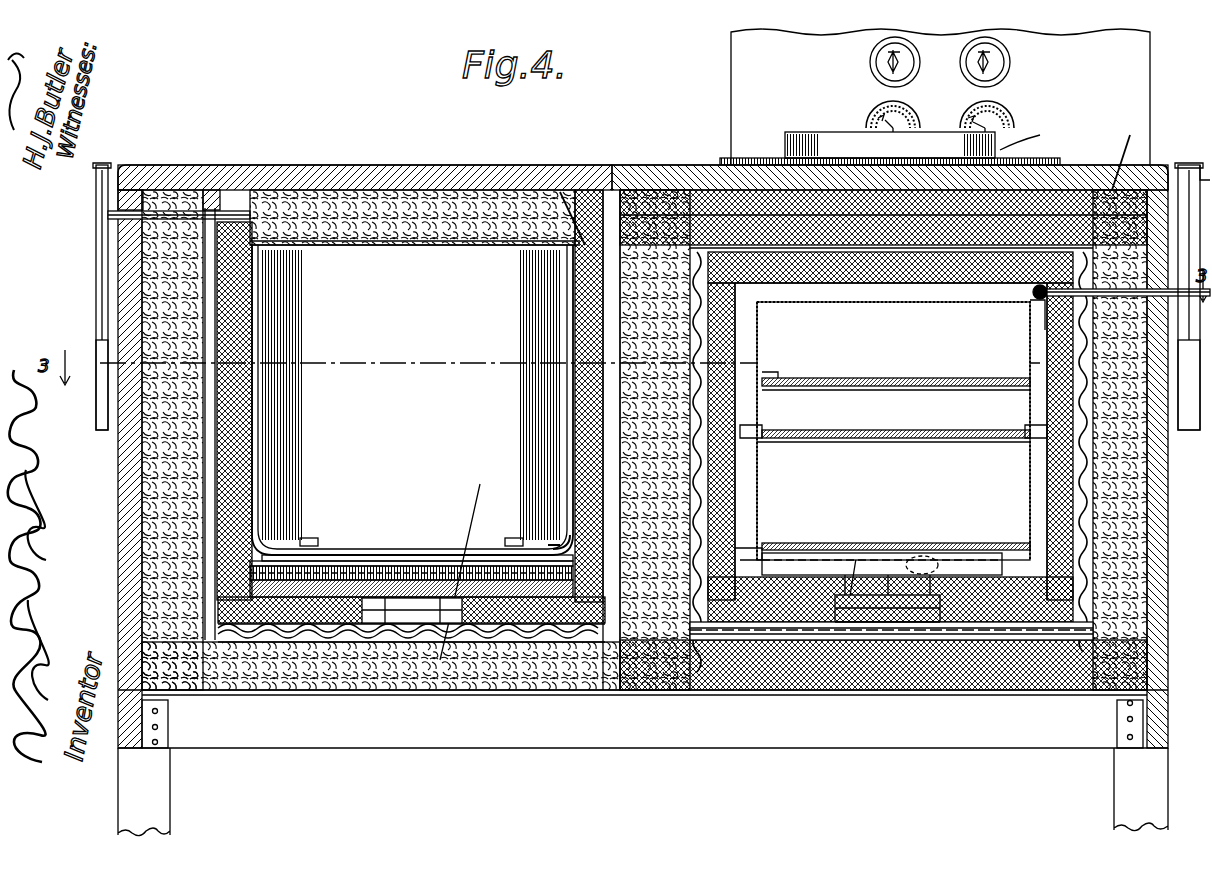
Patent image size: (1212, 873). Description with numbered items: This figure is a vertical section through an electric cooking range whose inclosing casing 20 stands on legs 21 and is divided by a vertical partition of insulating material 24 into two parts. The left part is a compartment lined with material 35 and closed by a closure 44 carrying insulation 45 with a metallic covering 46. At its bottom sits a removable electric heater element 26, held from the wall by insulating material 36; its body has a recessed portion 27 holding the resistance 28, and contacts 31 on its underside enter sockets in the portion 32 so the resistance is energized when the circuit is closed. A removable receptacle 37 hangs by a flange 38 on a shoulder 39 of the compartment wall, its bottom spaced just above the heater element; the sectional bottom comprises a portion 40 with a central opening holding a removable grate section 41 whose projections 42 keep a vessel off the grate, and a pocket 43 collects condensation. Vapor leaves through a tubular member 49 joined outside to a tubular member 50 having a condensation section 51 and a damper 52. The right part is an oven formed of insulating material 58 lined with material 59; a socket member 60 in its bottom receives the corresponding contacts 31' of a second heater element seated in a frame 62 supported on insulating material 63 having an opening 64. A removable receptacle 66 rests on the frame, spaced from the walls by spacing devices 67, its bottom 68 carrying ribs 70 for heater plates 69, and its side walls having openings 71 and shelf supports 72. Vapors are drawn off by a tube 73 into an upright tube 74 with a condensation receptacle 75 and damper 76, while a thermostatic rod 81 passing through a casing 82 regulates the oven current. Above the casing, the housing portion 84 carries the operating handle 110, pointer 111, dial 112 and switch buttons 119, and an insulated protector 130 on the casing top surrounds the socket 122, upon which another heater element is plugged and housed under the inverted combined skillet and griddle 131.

The inclosing casing 20 is at (1155, 605).
The legs 21 is at (1085, 784).
The insulating material 24 is at (655, 690).
The electric heater element 26 is at (753, 387).
The recessed portion 27 is at (925, 556).
The resistance 28 is at (385, 564).
The contacts 31 is at (411, 549).
The supporting plate 31' is at (891, 679).
The socket portion 32 is at (440, 660).
The lining material 35 is at (575, 286).
The insulating material 36 is at (250, 562).
The removable receptacle 37 is at (558, 326).
The flange 38 is at (275, 208).
The shoulder 39 is at (160, 272).
The bottom portion 40 is at (553, 540).
The removable grate section 41 is at (425, 560).
The projections 42 is at (350, 538).
The recess or pocket 43 is at (540, 548).
The closure 44 is at (475, 190).
The insulation 45 is at (390, 190).
The metallic covering 46 is at (402, 260).
The tubular member 49 is at (178, 208).
The tubular member 50 is at (205, 258).
The section 51 is at (96, 400).
The damper or closure 52 is at (96, 180).
The insulating material 58 is at (1075, 508).
The lining material 59 is at (1047, 490).
The socket member 60 is at (922, 640).
The frame 62 is at (760, 545).
The insulating material 63 is at (800, 575).
The opening 64 is at (885, 596).
The removable receptacle 66 is at (968, 308).
The spacing devices 67 is at (1040, 430).
The bottom 68 is at (795, 560).
The heater plates 69 is at (848, 378).
The ribs 70 is at (1010, 545).
The openings 71 is at (1030, 448).
The shelf supports 72 is at (1000, 440).
The tube 73 is at (1114, 159).
The upright tube 74 is at (1185, 165).
The receptacle 75 is at (1188, 432).
The closure or damper 76 is at (1202, 160).
The thermostatic rod or bar 81 is at (1033, 292).
The casing 82 is at (1030, 308).
The housing portion 84 is at (1140, 102).
The operating handle 110 is at (1010, 122).
The pointer 111 is at (978, 120).
The dial or indicator 112 is at (980, 120).
The switch buttons 119 is at (968, 62).
The socket 122 is at (870, 158).
The insulated protector 130 is at (732, 158).
The combined skillet and griddle 131 is at (800, 133).